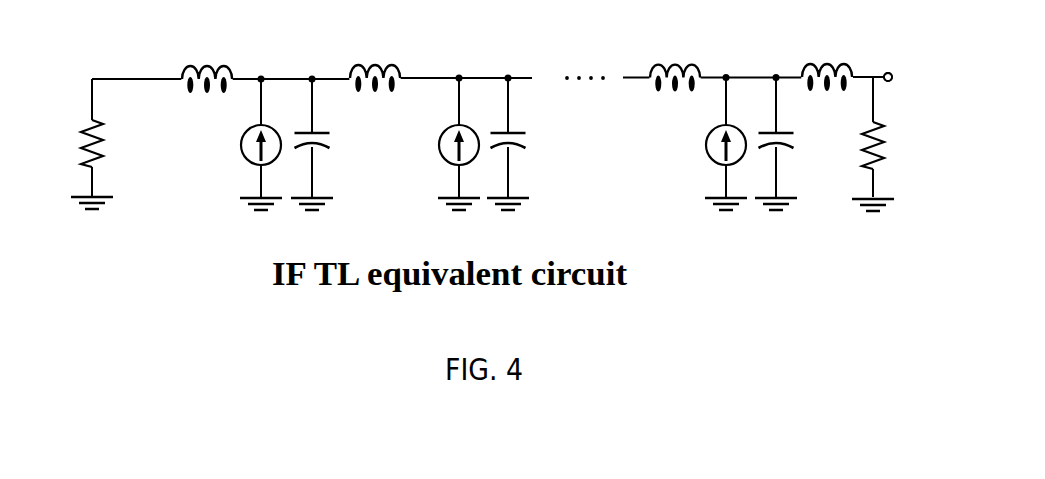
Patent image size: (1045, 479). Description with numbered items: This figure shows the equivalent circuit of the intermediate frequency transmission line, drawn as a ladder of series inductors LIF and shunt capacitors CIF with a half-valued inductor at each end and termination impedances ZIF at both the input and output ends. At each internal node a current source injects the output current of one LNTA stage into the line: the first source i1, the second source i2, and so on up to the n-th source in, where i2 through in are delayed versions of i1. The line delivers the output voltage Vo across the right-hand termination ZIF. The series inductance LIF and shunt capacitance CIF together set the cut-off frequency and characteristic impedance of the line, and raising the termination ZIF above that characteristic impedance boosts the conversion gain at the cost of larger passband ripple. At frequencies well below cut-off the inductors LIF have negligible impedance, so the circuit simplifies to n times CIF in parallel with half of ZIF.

The IF transmission line inductor LIF is at (511, 52).
The IF transmission line capacitor CIF is at (566, 144).
The IF output impedance ZIF is at (486, 144).
The first LNTA output current i1 is at (250, 144).
The second LNTA output current i2 is at (447, 144).
The n-th LNTA output current in is at (715, 144).
The output voltage Vo is at (906, 76).